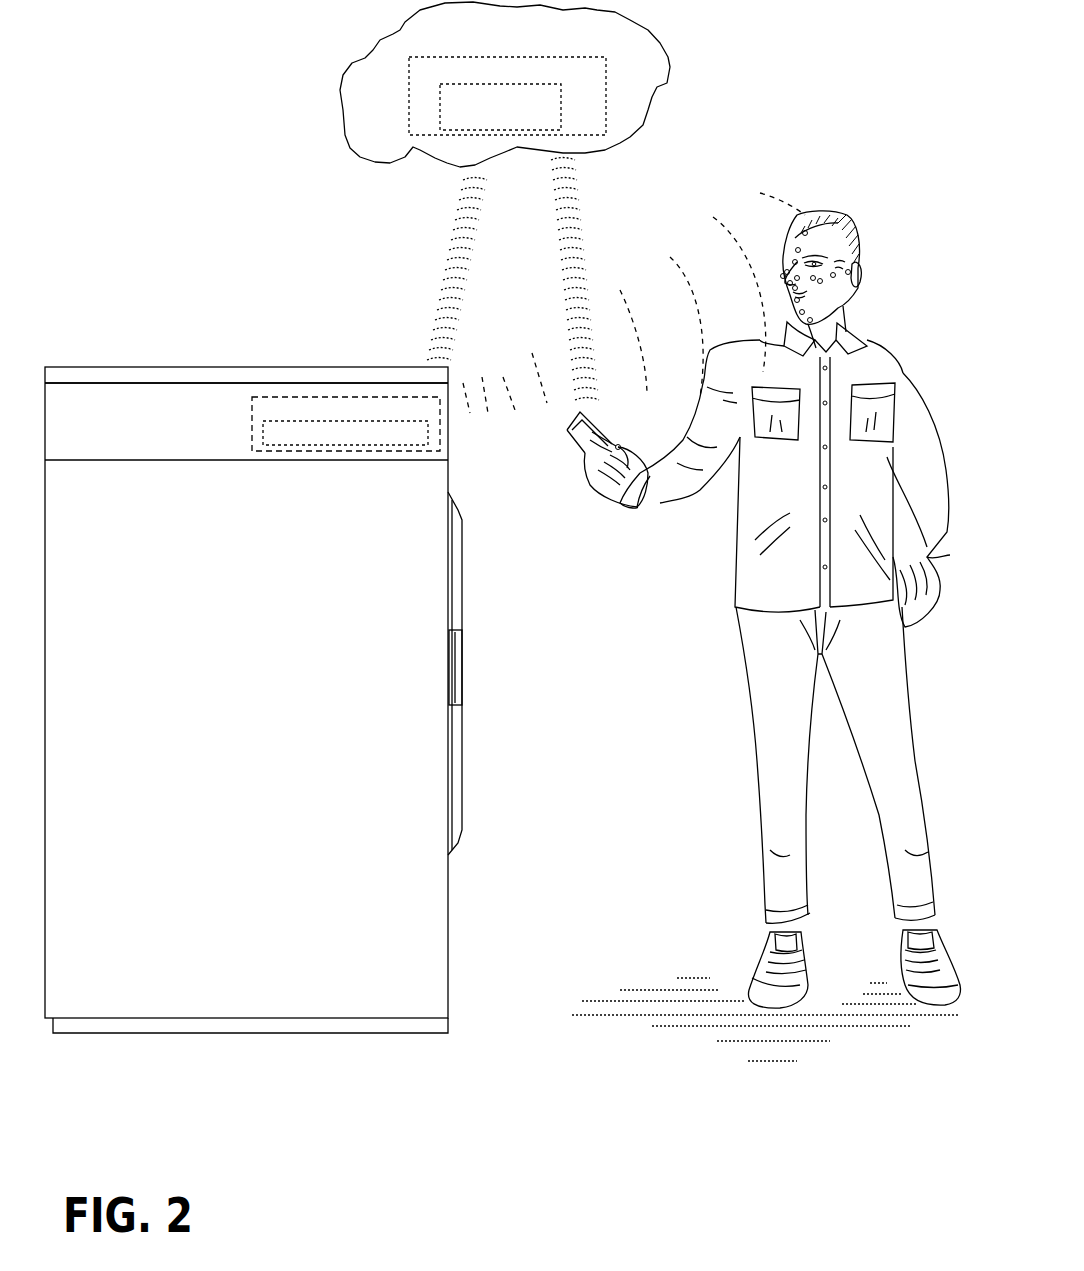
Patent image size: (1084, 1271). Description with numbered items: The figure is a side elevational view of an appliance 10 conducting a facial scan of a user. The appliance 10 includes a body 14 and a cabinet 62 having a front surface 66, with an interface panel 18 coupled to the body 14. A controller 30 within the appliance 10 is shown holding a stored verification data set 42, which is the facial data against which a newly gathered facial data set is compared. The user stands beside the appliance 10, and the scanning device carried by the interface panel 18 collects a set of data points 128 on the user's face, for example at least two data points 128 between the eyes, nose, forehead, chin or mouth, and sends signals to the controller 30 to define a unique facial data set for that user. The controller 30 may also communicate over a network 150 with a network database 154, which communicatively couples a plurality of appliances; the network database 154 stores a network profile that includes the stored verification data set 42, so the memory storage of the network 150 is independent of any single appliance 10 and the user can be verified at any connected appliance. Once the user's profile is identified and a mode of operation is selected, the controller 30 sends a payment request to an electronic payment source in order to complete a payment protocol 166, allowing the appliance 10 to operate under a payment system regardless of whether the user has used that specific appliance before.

The appliance 10 is at (177, 247).
The body 14 is at (260, 937).
The interface panel 18 is at (448, 400).
The controller 30 is at (287, 397).
The stored verification data set 42 is at (562, 103).
The cabinet 62 is at (145, 405).
The front surface 66 is at (450, 472).
The data points 128 is at (828, 233).
The network 150 is at (355, 85).
The network database 154 is at (607, 67).
The payment protocol 166 is at (572, 213).